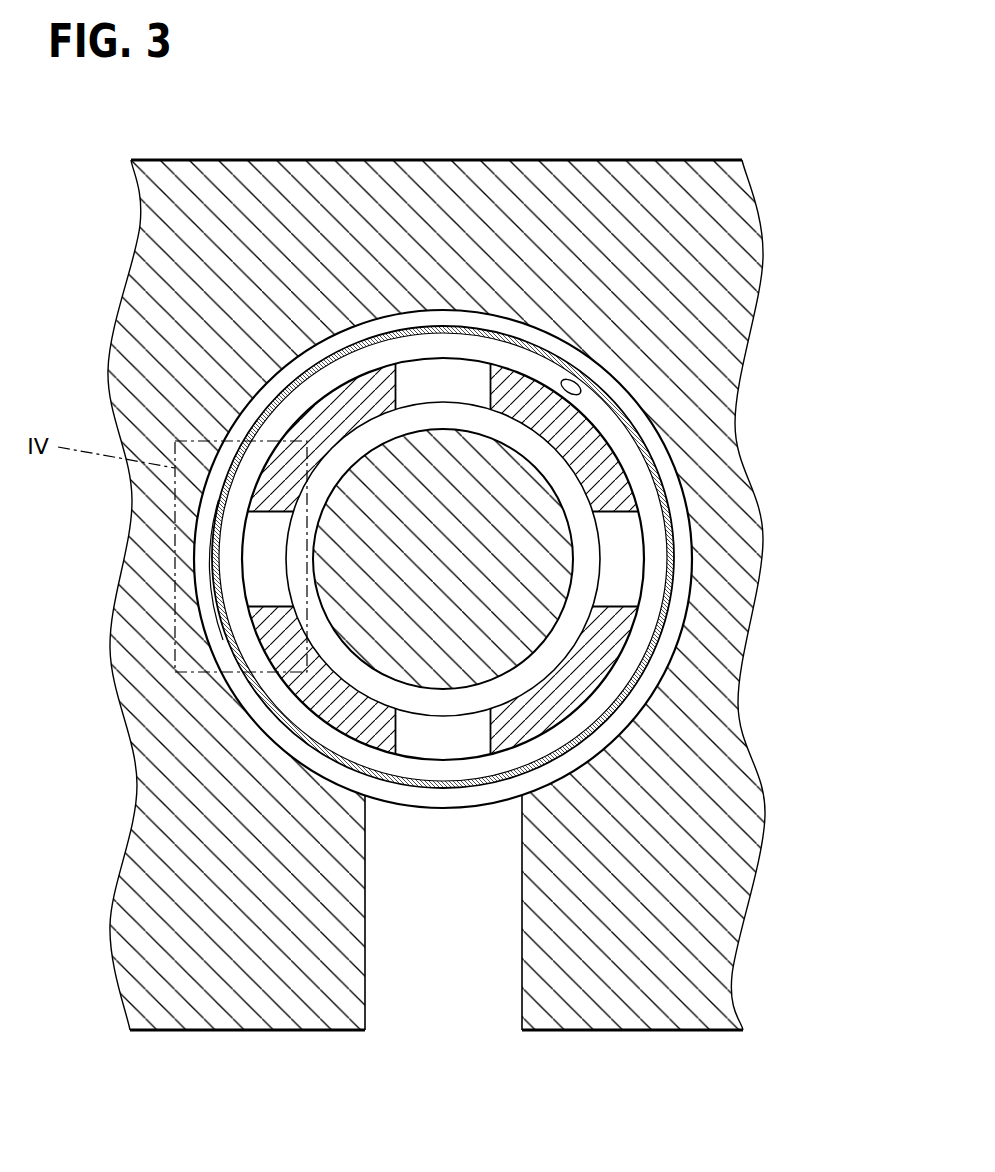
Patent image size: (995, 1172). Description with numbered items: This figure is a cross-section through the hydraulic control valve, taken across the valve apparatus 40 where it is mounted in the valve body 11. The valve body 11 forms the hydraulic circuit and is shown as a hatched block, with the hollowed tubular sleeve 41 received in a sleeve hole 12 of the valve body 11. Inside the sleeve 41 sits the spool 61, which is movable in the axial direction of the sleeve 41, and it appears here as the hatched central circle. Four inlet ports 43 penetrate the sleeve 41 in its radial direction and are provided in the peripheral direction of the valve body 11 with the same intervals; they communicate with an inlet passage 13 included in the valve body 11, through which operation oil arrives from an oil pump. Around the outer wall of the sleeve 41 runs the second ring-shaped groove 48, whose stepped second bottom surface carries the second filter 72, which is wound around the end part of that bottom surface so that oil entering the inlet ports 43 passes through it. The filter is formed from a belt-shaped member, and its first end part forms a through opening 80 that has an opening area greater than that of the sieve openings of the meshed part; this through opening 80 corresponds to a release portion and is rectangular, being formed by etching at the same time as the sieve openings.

The valve body 11 is at (683, 172).
The sleeve hole 12 is at (562, 382).
The inlet passage 13 is at (483, 975).
The valve apparatus 40 is at (435, 605).
The sleeve 41 is at (445, 605).
The inlet port 43 is at (440, 378).
The second ring-shaped groove 48 is at (382, 322).
The spool 61 is at (505, 495).
The second filter 72 is at (598, 400).
The through opening 80 is at (225, 530).